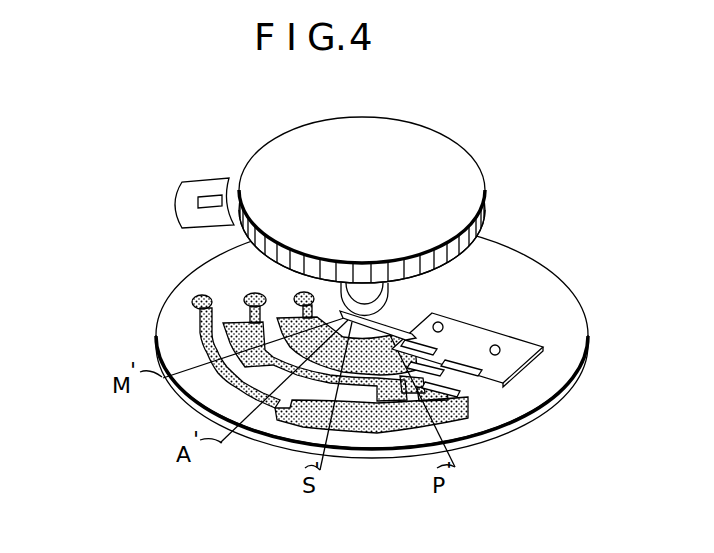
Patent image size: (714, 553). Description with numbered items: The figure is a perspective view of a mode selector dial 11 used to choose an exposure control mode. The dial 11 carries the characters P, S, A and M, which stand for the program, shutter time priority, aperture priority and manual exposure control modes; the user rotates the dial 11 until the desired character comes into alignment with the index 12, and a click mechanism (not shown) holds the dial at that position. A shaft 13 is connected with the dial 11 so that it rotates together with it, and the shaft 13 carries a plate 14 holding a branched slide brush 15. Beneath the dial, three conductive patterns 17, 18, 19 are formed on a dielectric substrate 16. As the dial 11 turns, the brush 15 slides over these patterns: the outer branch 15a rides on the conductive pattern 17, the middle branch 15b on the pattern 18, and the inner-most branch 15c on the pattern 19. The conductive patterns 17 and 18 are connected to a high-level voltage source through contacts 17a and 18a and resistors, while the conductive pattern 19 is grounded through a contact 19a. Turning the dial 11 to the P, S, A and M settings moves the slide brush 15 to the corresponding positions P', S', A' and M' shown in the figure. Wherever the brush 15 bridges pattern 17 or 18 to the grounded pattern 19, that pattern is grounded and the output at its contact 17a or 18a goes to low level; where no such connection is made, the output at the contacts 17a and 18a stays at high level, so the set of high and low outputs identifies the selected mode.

The mode selector dial 11 is at (457, 141).
The index 12 is at (208, 198).
The shaft 13 is at (377, 297).
The plate 14 is at (417, 337).
The branched slide brush 15 is at (510, 358).
The outer branch 15a is at (487, 373).
The middle branch 15b is at (443, 358).
The inner-most branch 15c is at (411, 342).
The dielectric substrate 16 is at (160, 322).
The conductive pattern 17 is at (274, 376).
The contact 17a is at (195, 299).
The conductive pattern 18 is at (244, 315).
The contact 18a is at (240, 327).
The conductive pattern 19 is at (277, 302).
The contact 19a is at (293, 323).